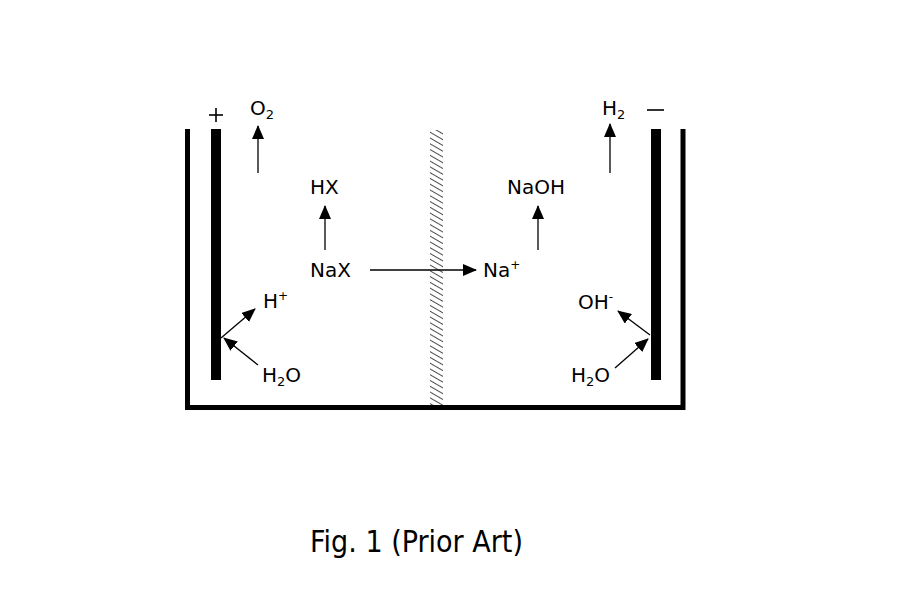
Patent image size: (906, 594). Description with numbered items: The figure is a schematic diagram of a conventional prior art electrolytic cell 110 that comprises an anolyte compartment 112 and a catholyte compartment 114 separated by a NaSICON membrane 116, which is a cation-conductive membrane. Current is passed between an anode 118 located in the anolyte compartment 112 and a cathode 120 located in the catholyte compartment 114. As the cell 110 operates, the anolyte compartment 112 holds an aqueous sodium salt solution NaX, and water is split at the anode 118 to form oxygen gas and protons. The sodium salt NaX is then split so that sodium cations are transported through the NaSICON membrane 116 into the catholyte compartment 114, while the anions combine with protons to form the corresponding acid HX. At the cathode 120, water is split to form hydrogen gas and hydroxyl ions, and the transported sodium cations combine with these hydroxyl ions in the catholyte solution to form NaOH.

The electrolytic cell 110 is at (142, 178).
The anolyte compartment 112 is at (387, 353).
The catholyte compartment 114 is at (517, 350).
The NaSICON membrane 116 is at (438, 365).
The anode 118 is at (211, 298).
The cathode 120 is at (660, 297).